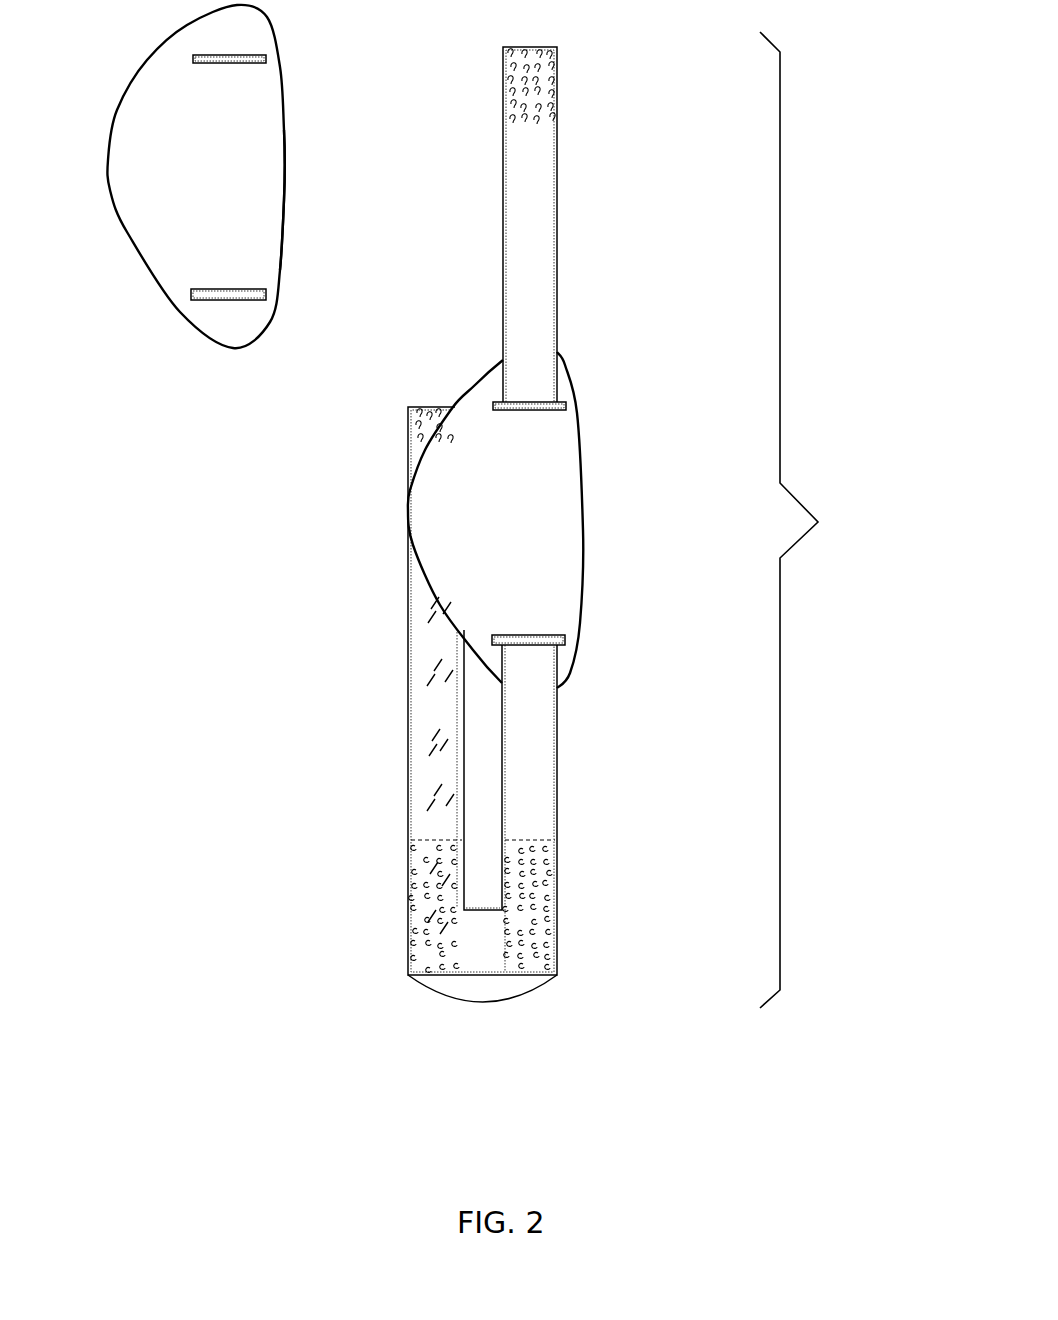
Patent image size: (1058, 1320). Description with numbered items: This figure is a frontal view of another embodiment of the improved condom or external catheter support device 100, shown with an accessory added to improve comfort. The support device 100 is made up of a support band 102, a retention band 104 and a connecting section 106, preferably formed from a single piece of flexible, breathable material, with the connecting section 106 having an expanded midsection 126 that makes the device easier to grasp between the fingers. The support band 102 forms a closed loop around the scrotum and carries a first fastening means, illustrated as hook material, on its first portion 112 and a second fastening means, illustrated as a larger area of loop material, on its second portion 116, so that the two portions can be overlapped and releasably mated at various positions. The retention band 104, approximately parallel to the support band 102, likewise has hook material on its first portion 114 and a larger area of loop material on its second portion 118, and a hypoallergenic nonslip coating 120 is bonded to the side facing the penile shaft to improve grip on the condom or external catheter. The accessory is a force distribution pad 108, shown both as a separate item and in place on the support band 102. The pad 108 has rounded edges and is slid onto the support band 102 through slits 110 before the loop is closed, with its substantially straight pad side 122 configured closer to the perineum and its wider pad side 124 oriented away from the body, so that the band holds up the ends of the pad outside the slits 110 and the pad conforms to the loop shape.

The support device 100 is at (813, 520).
The support band 102 is at (563, 228).
The retention band 104 is at (407, 668).
The connecting section 106 is at (478, 945).
The force distribution pad 108 is at (478, 427).
The slits 110 is at (232, 283).
The first portion of the support band 112 is at (548, 93).
The first portion of the retention band 114 is at (417, 450).
The second portion of the support band 116 is at (557, 905).
The second portion of the retention band 118 is at (408, 905).
The hypoallergenic nonslip coating 120 is at (433, 753).
The substantially straight pad side 122 is at (285, 212).
The wider pad side 124 is at (113, 220).
The expanded midsection 126 is at (490, 1003).